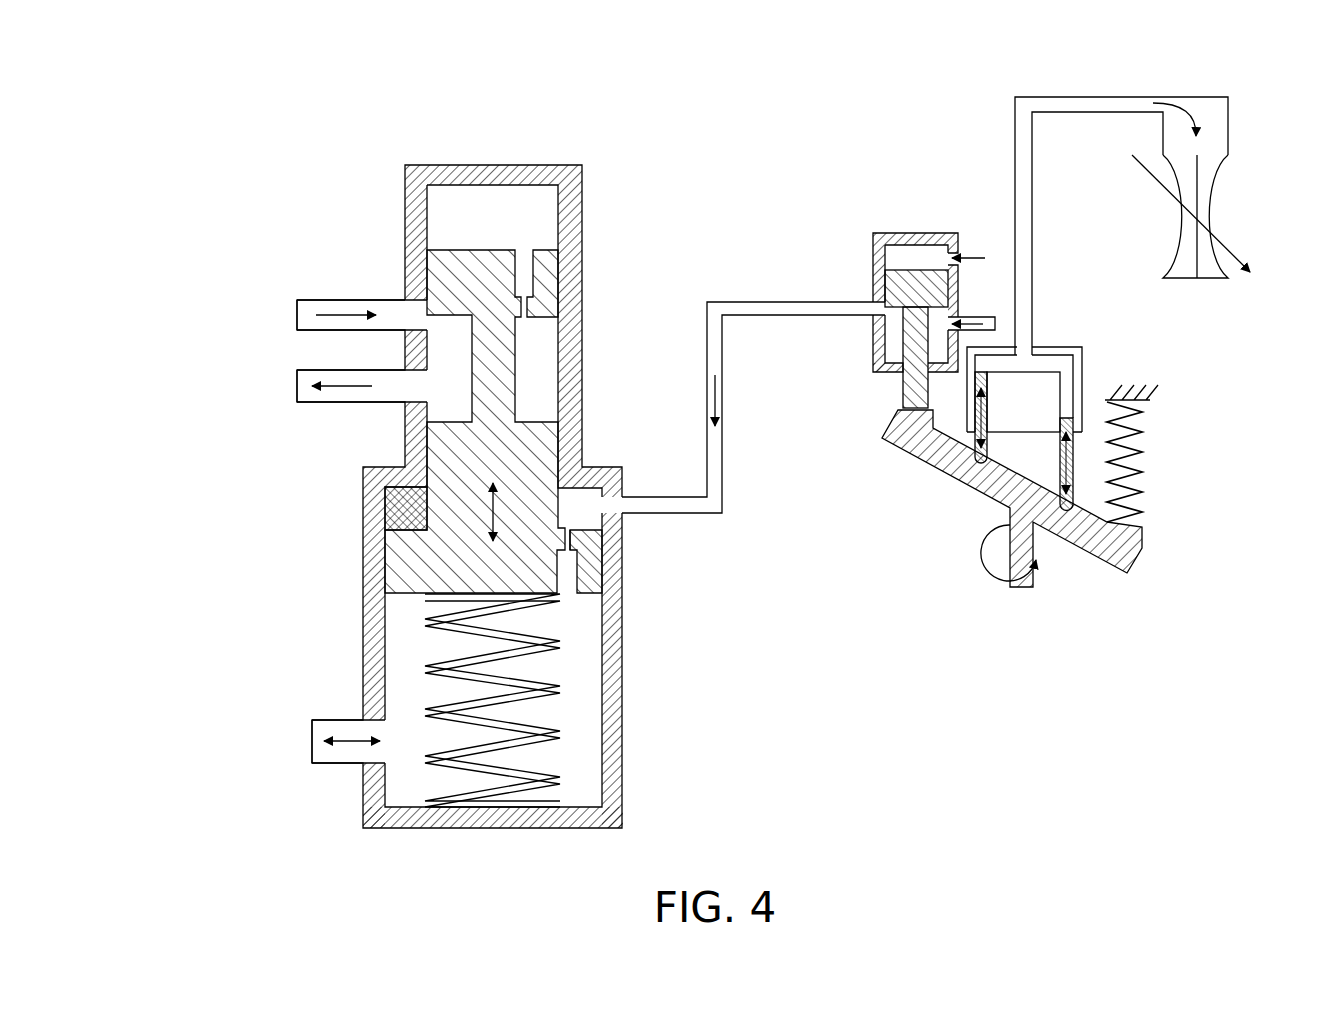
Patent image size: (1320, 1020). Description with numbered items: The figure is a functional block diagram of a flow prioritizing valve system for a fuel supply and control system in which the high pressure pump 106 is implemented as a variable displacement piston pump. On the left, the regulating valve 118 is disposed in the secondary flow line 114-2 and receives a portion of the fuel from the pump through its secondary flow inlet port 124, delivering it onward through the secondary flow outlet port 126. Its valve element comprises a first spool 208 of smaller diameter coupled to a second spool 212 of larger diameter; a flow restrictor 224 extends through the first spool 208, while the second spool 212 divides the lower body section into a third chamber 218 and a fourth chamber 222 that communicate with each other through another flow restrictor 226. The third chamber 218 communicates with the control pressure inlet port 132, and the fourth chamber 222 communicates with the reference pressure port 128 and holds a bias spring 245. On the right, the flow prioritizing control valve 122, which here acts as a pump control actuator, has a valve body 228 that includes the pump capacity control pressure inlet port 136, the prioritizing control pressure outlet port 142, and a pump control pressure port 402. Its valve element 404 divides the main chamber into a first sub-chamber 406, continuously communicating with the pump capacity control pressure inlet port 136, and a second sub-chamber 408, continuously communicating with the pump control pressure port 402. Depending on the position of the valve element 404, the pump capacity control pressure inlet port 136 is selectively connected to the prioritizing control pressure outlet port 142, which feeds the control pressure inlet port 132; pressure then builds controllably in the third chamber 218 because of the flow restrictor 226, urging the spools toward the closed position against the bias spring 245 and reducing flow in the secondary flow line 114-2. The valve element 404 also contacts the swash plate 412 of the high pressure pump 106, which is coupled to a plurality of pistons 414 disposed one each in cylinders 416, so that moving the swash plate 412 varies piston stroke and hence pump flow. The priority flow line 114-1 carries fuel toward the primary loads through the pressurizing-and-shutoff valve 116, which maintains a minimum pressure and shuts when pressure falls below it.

The high pressure pump 106 is at (1046, 449).
The priority flow line 114-1 is at (1092, 97).
The secondary flow line 114-2 is at (392, 365).
The pressurizing-and-shutoff valve 116 is at (1213, 210).
The regulating valve 118 is at (592, 227).
The flow prioritizing control valve 122 is at (902, 271).
The secondary flow inlet port 124 is at (405, 298).
The secondary flow outlet port 126 is at (385, 392).
The reference pressure port 128 is at (336, 722).
The control pressure inlet port 132 is at (617, 505).
The pump capacity control pressure inlet port 136 is at (980, 320).
The prioritizing control pressure outlet port 142 is at (872, 312).
The first spool 208 is at (475, 254).
The second spool 212 is at (585, 578).
The third chamber 218 is at (590, 482).
The fourth chamber 222 is at (590, 786).
The flow restrictor 224 is at (536, 301).
The flow restrictor 226 is at (565, 536).
The valve body 228 is at (875, 240).
The bias spring 245 is at (560, 733).
The pump control pressure port 402 is at (962, 248).
The valve element 404 is at (893, 283).
The first sub-chamber 406 is at (893, 345).
The second sub-chamber 408 is at (922, 252).
The swash plate 412 is at (945, 473).
The pistons 414 is at (1060, 445).
The cylinders 416 is at (1060, 387).